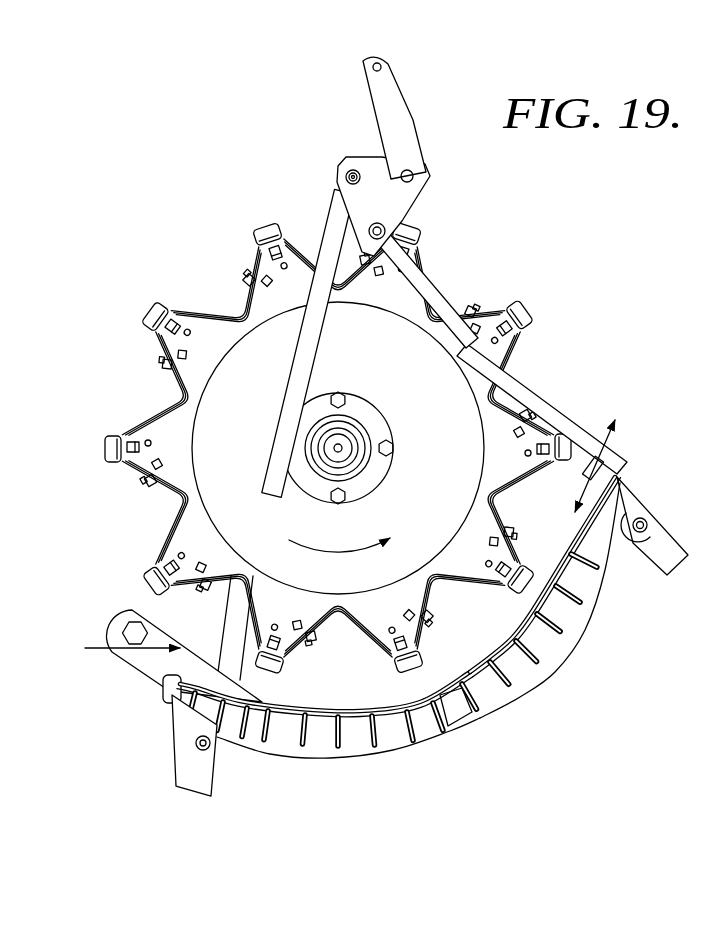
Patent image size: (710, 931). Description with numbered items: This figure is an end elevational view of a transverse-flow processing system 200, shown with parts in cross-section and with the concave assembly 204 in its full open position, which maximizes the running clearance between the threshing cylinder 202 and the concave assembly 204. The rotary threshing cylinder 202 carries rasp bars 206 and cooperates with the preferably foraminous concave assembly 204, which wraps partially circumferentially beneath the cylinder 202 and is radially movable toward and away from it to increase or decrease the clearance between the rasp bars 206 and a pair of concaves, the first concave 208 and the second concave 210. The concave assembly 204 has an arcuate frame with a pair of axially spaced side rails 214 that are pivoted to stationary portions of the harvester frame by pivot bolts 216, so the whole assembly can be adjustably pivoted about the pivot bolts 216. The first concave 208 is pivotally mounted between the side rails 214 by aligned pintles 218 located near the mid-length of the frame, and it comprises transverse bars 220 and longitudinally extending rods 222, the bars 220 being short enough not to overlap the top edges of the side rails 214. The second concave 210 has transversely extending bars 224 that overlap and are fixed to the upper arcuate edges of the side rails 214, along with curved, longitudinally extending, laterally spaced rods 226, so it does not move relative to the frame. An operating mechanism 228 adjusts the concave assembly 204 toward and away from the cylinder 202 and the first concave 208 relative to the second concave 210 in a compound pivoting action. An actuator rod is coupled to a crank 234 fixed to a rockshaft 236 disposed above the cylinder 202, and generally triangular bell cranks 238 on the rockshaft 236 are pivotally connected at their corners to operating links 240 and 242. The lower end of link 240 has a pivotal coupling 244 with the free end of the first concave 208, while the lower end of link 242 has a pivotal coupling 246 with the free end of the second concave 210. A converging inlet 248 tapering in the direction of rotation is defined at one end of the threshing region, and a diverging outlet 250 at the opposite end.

The processing system 200 is at (222, 138).
The threshing cylinder 202 is at (187, 283).
The concave assembly 204 is at (392, 655).
The rasp bars 206 is at (158, 316).
The first concave 208 is at (285, 750).
The second concave 210 is at (568, 618).
The side rails 214 is at (147, 660).
The pivot bolts 216 is at (133, 632).
The pintles 218 is at (449, 728).
The transverse bars 220 is at (268, 725).
The longitudinally extending rods 222 is at (320, 722).
The transversely extending bars 224 is at (522, 665).
The rods 226 is at (532, 598).
The operating mechanism 228 is at (404, 156).
The crank 234 is at (387, 103).
The rockshaft 236 is at (411, 170).
The bell cranks 238 is at (358, 175).
The operating link 240 is at (318, 362).
The operating link 242 is at (440, 294).
The pivotal coupling 244 is at (188, 756).
The pivotal coupling 246 is at (650, 527).
The converging inlet 248 is at (155, 605).
The diverging outlet 250 is at (605, 480).